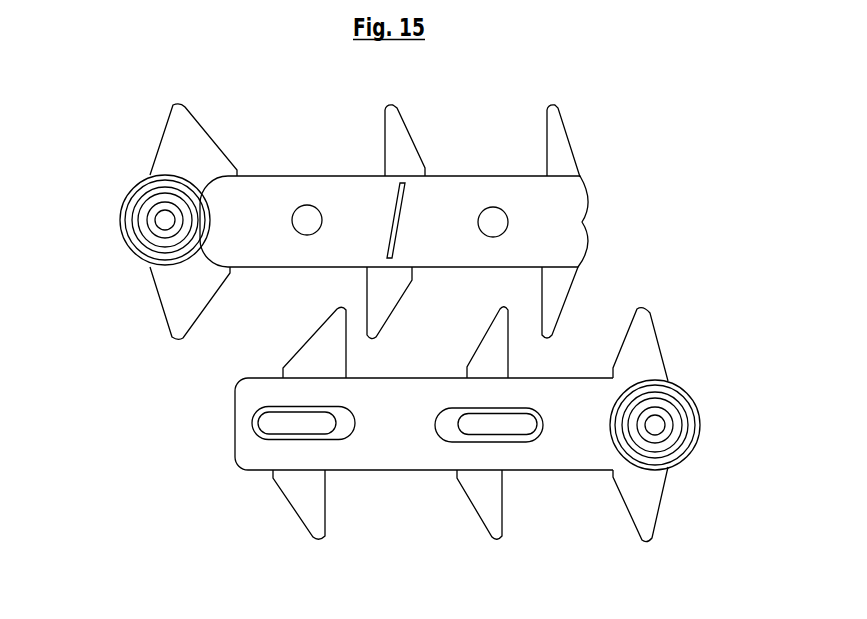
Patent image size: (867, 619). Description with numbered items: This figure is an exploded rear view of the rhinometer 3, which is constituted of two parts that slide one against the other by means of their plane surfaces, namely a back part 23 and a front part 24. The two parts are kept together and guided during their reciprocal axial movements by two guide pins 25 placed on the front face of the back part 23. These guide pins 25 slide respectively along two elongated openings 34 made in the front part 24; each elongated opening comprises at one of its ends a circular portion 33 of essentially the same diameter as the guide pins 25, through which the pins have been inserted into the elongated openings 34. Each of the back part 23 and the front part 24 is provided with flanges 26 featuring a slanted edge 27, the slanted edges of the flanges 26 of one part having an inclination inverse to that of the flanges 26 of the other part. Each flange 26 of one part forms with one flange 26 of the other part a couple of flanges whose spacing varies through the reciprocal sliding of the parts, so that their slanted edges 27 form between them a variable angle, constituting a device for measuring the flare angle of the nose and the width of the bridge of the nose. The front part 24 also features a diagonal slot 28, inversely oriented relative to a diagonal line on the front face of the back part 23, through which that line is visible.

The rhinometer 3 is at (178, 378).
The back part 23 is at (662, 420).
The front part 24 is at (140, 210).
The guide pins 25 is at (303, 218).
The flanges 26 is at (175, 137).
The slanted edge 27 is at (277, 508).
The diagonal slot 28 is at (398, 223).
The circular portion 33 is at (338, 422).
The elongated openings 34 is at (287, 422).